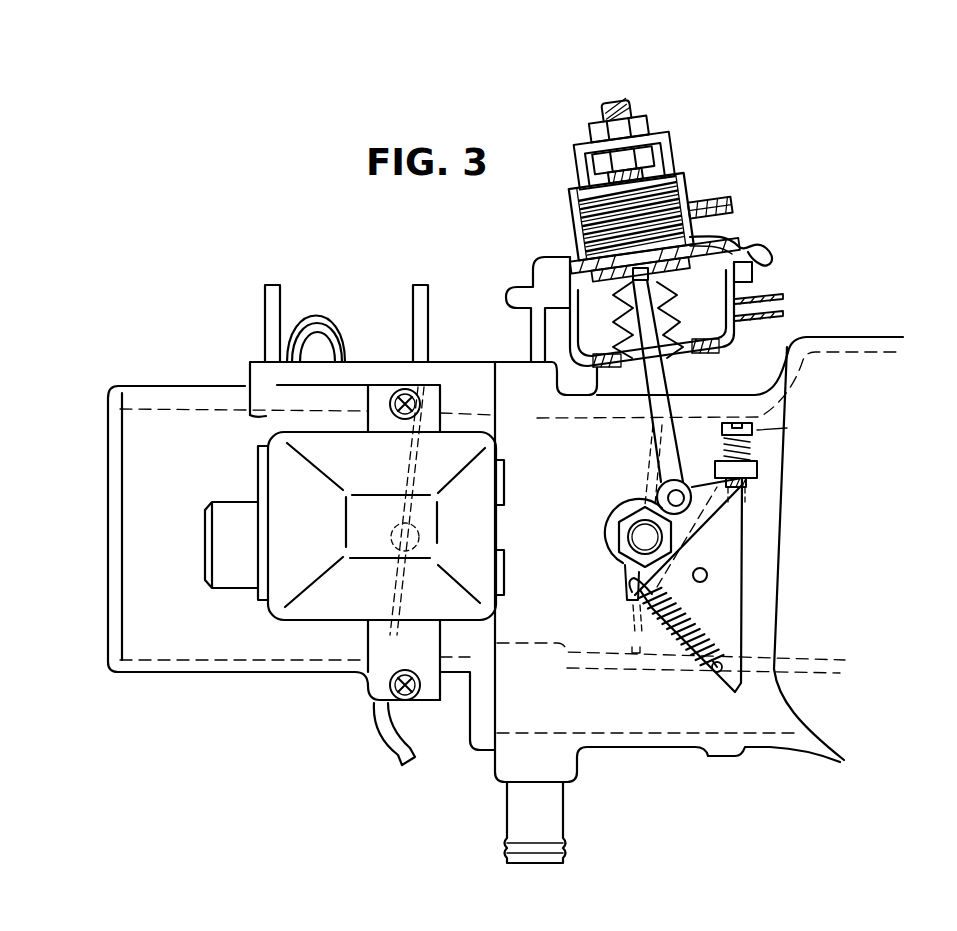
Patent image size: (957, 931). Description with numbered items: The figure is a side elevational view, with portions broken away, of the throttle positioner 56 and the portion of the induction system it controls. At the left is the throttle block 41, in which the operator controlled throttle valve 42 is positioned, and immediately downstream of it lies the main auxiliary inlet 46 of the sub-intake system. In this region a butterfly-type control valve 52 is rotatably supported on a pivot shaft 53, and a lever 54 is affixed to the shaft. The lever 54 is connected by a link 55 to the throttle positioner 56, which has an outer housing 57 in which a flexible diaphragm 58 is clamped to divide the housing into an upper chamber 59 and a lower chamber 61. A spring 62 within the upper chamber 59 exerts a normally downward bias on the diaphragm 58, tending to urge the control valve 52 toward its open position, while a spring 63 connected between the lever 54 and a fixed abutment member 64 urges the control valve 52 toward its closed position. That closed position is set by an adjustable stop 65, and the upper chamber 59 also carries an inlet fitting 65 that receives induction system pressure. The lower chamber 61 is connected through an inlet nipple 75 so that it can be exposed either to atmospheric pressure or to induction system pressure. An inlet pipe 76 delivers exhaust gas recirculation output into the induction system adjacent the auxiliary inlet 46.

The throttle block 41 is at (260, 670).
The throttle valve 42 is at (403, 601).
The main auxiliary inlet 46 is at (625, 742).
The control valve 52 is at (637, 627).
The pivot shaft 53 is at (625, 548).
The lever 54 is at (717, 510).
The link 55 is at (660, 438).
The throttle positioner 56 is at (757, 218).
The outer housing 57 is at (753, 283).
The flexible diaphragm 58 is at (748, 246).
The upper chamber 59 is at (573, 213).
The lower chamber 61 is at (587, 347).
The spring 62 is at (695, 193).
The spring 63 is at (670, 657).
The fixed abutment member 64 is at (746, 556).
The adjustable stop 65 is at (730, 205).
The inlet nipple 75 is at (783, 325).
The inlet pipe 76 is at (550, 824).